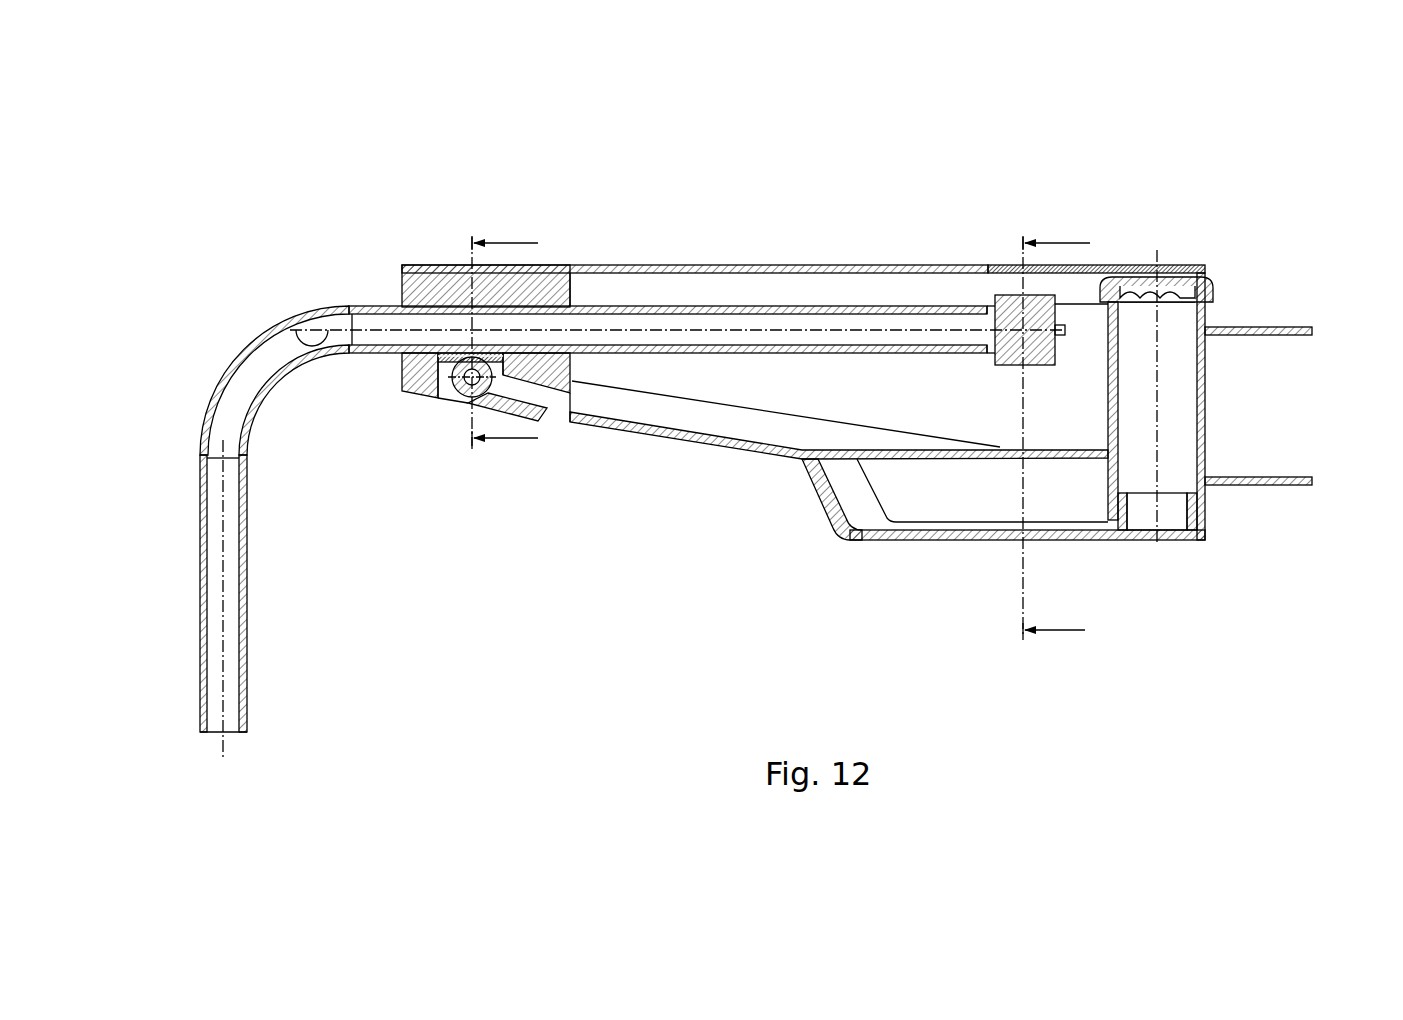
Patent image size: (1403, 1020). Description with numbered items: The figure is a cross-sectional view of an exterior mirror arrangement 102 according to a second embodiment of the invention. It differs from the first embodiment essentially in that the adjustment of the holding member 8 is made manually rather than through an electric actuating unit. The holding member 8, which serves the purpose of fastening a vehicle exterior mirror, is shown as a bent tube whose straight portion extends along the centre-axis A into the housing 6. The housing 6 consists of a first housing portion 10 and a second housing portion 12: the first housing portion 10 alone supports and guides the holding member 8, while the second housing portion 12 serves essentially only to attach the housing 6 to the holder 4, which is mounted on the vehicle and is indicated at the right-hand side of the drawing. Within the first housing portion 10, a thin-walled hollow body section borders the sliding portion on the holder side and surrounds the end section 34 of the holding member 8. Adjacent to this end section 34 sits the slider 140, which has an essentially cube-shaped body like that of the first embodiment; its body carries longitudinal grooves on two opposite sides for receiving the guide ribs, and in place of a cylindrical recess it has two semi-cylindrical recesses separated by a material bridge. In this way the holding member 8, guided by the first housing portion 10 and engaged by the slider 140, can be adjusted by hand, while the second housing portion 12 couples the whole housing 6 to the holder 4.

The exterior mirror arrangement 102 is at (764, 255).
The first housing portion 10 is at (717, 265).
The holding member 8 is at (258, 543).
The centre-axis A is at (301, 334).
The end section 34 is at (987, 308).
The slider 140 is at (1012, 295).
The second housing portion 12 is at (860, 542).
The housing 6 is at (717, 583).
The holder 4 is at (1280, 532).